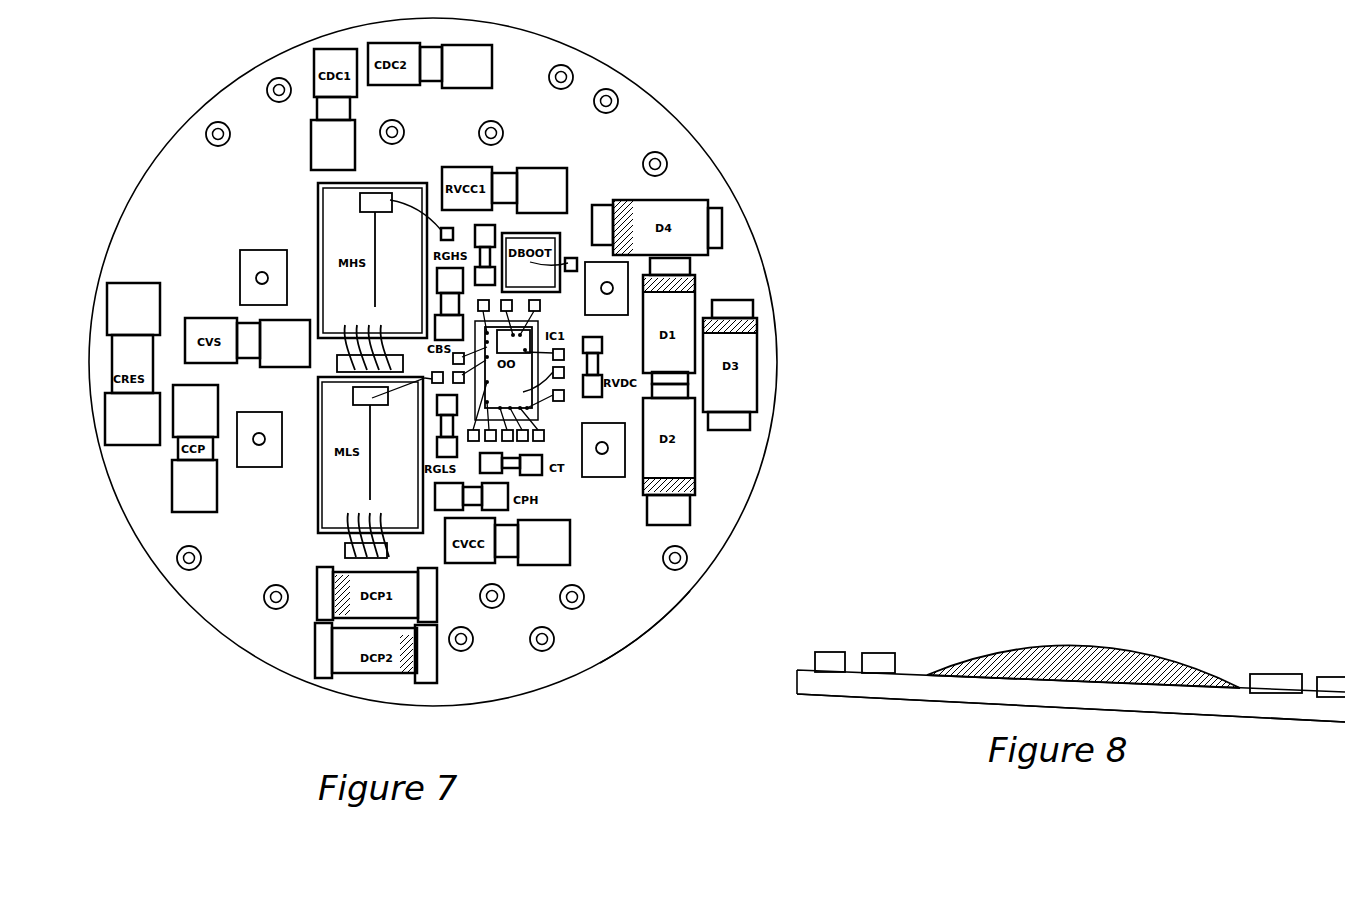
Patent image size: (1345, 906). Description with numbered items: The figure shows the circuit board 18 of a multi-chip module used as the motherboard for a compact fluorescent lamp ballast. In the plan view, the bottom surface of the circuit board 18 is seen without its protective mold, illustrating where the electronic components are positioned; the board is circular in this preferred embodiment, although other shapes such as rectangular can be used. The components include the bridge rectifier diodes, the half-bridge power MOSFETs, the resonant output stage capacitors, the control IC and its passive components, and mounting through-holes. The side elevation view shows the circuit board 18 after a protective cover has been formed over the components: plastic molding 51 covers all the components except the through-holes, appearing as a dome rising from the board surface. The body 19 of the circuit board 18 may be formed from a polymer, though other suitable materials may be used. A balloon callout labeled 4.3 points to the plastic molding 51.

In FIG. 7, the circuit board 18 is at (717, 163).
In FIG. 8, the circuit board 18 is at (792, 683).
In FIG. 7, the body 19 is at (629, 622).
In FIG. 8, the body 19 is at (895, 690).
In FIG. 8, the plastic molding 51 is at (1010, 668).
In FIG. 8, the encapsulation dome 4.3 is at (1077, 648).